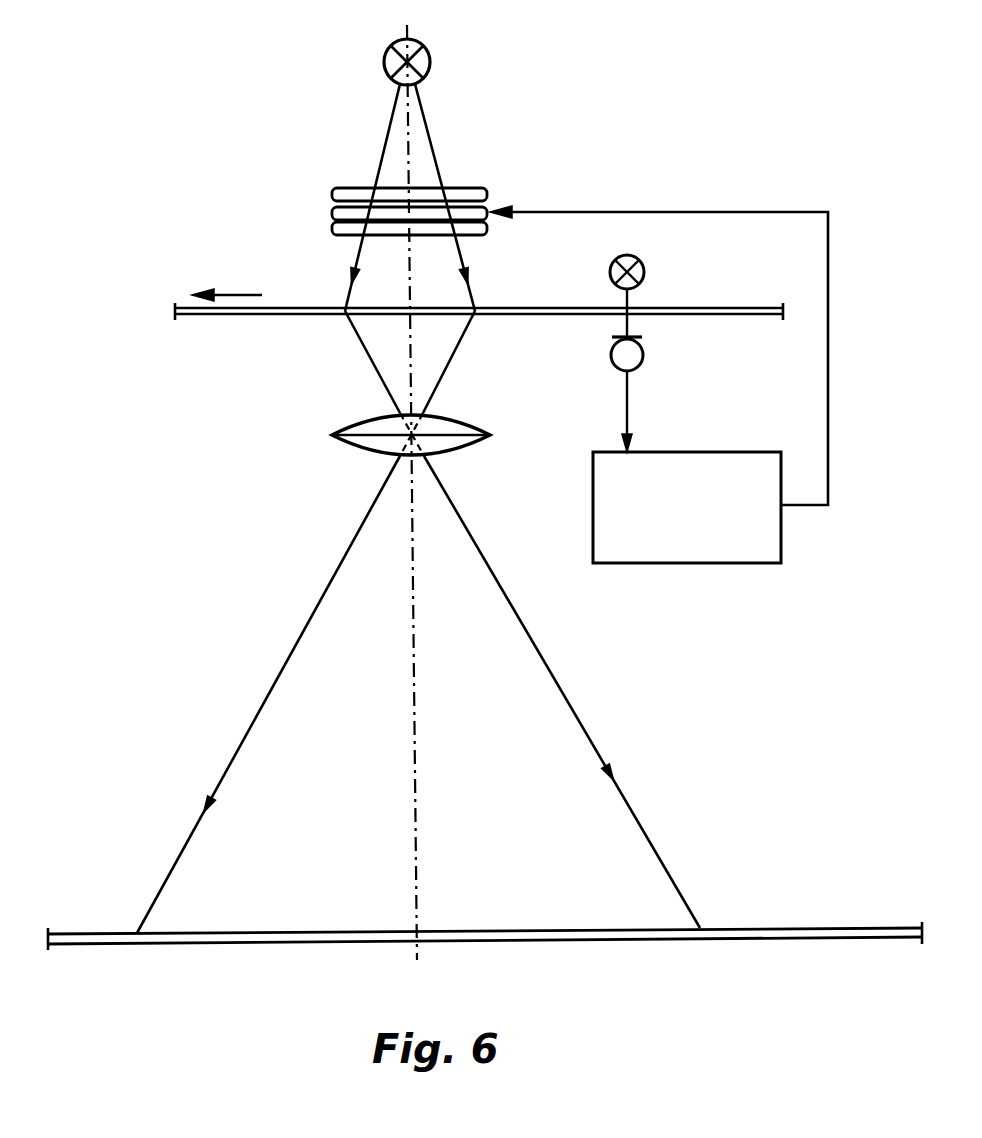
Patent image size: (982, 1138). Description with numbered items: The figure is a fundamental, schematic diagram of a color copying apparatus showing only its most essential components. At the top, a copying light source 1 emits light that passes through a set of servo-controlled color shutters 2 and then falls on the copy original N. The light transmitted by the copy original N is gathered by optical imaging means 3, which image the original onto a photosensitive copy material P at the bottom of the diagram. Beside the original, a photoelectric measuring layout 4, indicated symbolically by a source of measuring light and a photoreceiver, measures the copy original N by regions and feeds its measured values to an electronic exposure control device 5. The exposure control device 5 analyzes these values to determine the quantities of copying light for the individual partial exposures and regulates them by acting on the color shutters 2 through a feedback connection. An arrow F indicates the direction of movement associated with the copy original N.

The copying light source 1 is at (430, 62).
The set of servo-controlled color shutters 2 is at (328, 181).
The optical imaging means 3 is at (458, 440).
The photoelectric measuring layout 4 is at (659, 253).
The electronic exposure control device 5 is at (705, 550).
The copy original N is at (549, 306).
The film transport direction F is at (227, 282).
The photosensitive copy material P is at (505, 930).